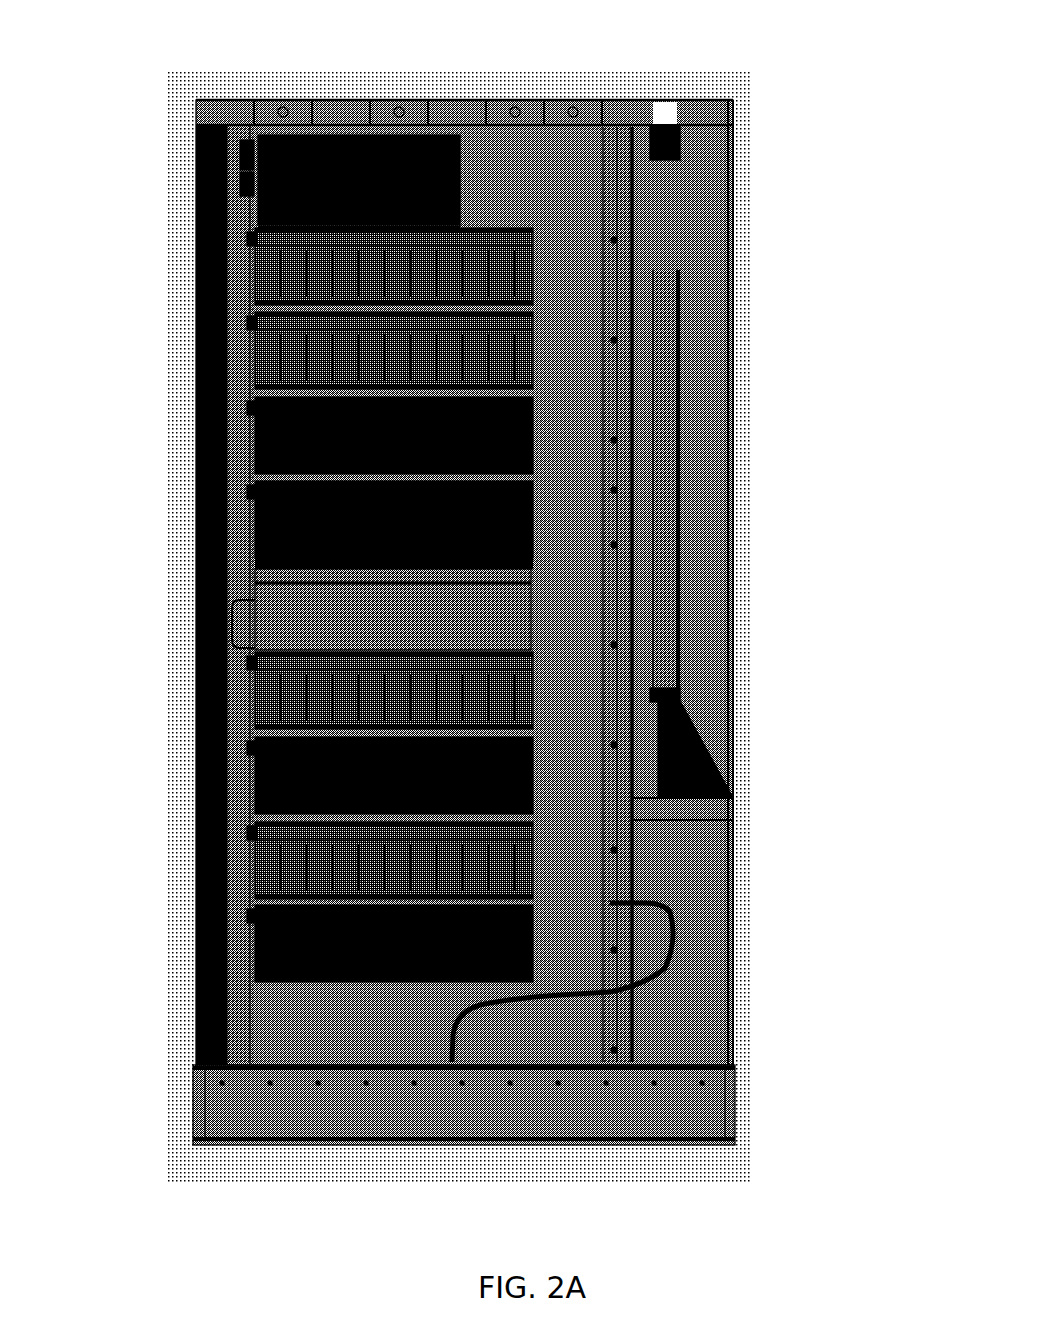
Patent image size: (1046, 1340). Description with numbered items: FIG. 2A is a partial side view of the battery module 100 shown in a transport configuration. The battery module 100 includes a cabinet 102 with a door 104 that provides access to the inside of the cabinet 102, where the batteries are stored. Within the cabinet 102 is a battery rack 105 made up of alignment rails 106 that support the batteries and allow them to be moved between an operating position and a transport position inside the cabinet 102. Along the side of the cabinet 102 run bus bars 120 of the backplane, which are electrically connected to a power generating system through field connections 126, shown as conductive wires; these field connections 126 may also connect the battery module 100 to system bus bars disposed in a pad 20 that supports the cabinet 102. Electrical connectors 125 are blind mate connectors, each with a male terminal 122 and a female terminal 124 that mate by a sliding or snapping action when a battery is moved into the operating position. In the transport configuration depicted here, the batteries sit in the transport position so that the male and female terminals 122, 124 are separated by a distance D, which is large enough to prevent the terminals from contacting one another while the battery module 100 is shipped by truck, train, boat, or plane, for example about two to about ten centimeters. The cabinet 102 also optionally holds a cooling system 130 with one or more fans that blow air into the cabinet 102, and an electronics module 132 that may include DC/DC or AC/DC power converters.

The battery module 100 is at (484, 39).
The cabinet 102 is at (730, 660).
The door 104 is at (200, 218).
The battery rack 105 is at (86, 408).
The alignment rails 106 is at (230, 347).
The bus bars 120 is at (605, 210).
The male terminal 122 is at (612, 335).
The female terminal 124 is at (645, 293).
The electrical connectors 125 is at (769, 413).
The field connections 126 is at (675, 972).
The cooling system 130 is at (320, 612).
The electronics module 132 is at (300, 187).
The distance D is at (615, 490).
The pad 20 is at (735, 1090).